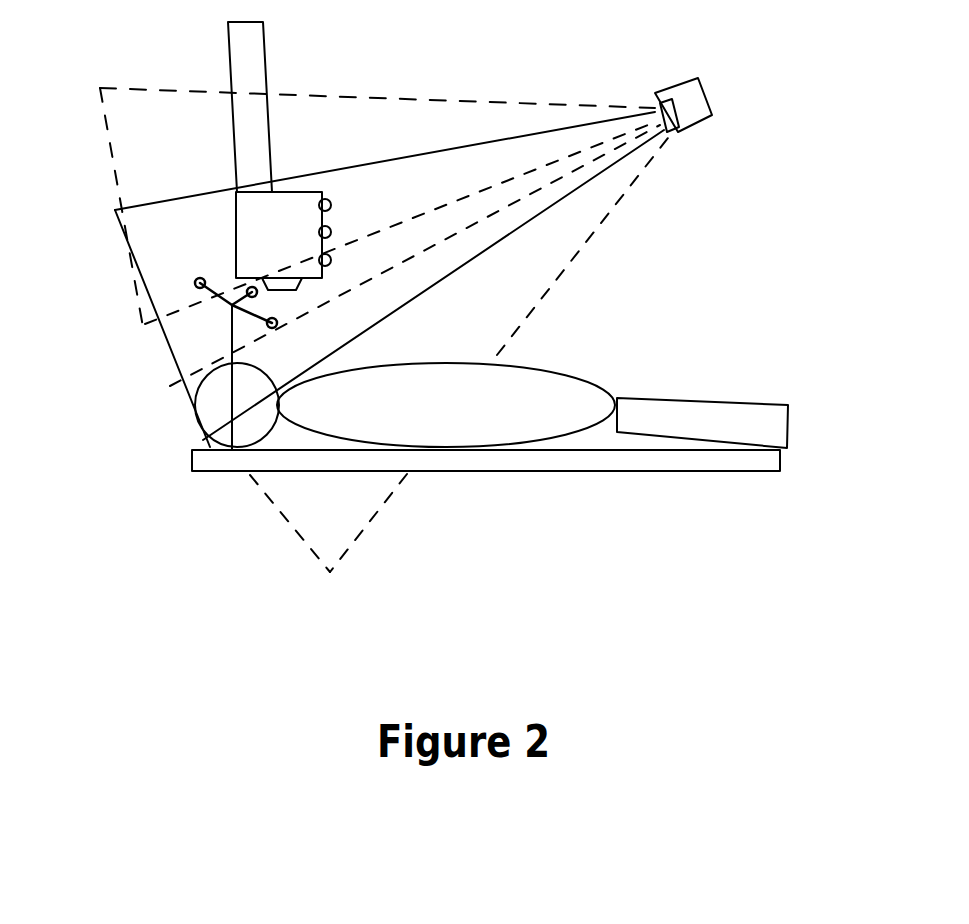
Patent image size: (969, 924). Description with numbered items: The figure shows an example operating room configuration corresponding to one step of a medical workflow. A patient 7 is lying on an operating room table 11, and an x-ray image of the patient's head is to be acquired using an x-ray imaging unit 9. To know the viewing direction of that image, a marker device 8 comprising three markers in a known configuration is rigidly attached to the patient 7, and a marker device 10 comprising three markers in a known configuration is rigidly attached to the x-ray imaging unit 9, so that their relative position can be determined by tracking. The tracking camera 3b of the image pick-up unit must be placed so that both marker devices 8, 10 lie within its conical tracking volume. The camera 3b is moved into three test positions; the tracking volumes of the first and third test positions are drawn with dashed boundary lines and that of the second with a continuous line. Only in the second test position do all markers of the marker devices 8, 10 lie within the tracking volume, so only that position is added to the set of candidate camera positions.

The camera 3b is at (703, 90).
The patient 7 is at (435, 437).
The marker device 8 is at (232, 305).
The x-ray imaging unit 9 is at (248, 232).
The marker device 10 is at (333, 205).
The operating room table 11 is at (580, 470).